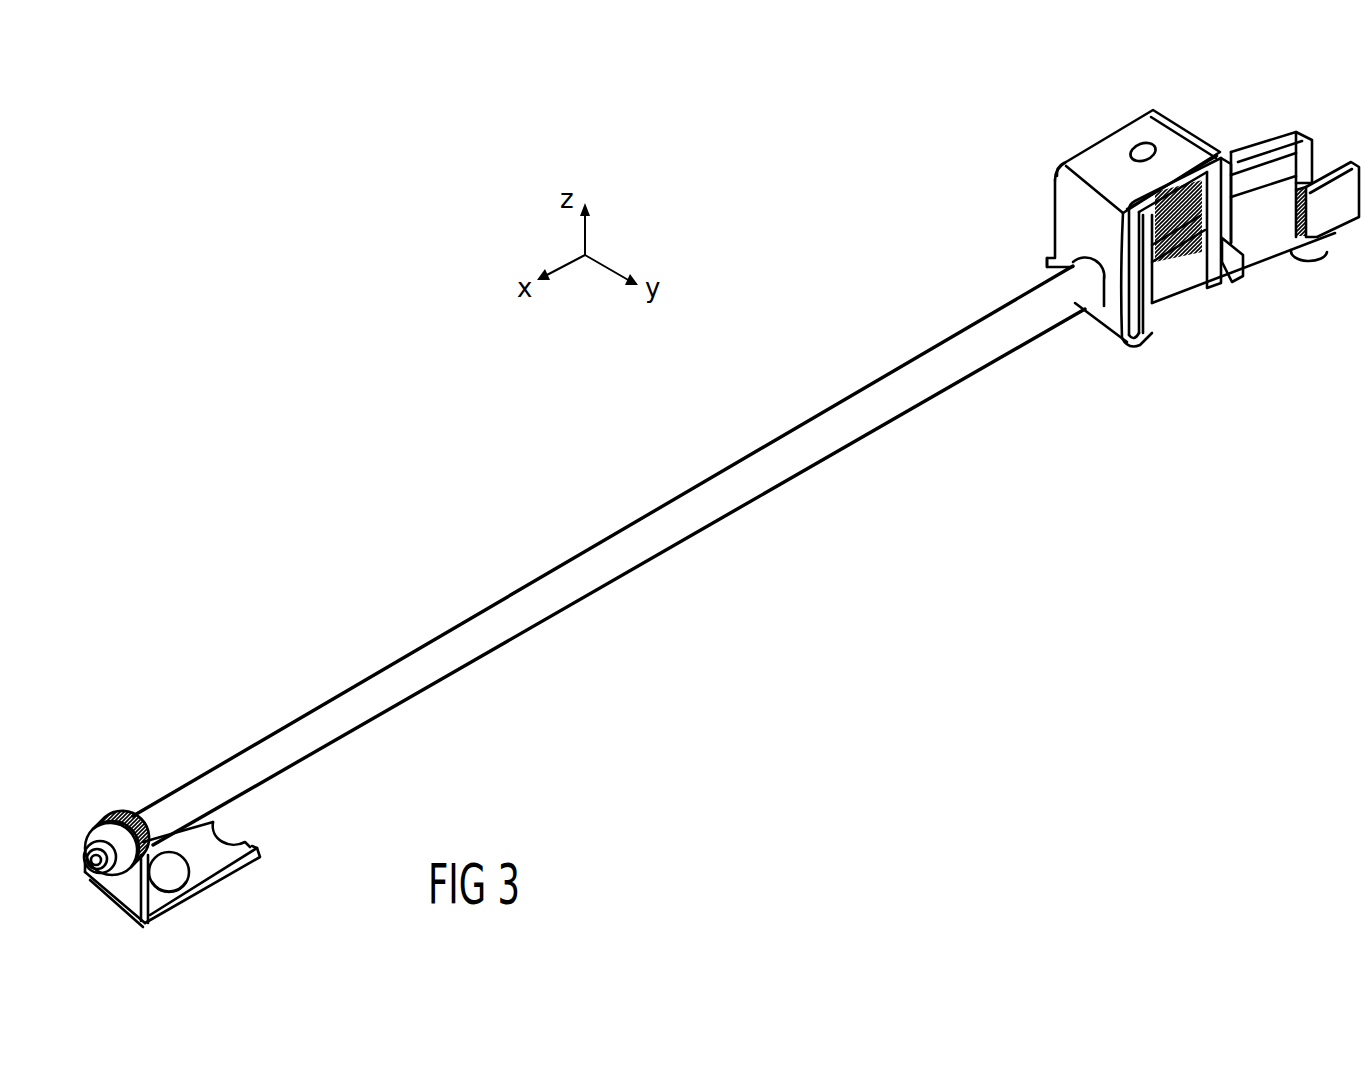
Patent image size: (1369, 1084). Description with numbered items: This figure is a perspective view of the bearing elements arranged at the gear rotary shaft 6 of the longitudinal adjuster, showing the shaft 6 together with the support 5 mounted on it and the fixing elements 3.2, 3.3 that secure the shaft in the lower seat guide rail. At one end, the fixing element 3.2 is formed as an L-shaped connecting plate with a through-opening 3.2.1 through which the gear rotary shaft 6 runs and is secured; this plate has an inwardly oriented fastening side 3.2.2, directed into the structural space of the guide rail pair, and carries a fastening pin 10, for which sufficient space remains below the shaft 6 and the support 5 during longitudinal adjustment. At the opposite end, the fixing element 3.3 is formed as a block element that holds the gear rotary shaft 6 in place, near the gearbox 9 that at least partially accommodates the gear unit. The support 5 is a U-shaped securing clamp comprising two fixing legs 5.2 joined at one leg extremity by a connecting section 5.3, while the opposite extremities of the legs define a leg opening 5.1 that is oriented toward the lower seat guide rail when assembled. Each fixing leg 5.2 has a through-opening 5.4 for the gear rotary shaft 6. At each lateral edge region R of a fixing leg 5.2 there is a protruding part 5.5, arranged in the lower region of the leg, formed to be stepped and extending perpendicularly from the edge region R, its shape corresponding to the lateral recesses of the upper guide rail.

The support 5 is at (1132, 243).
The leg opening 5.1 is at (1140, 318).
The fixing leg 5.2 is at (1226, 167).
The section 5.3 is at (1167, 135).
The through-opening 5.4 is at (1099, 310).
The protruding part 5.5 is at (1047, 278).
The lateral edge region R is at (1191, 162).
The gearbox 9 is at (1183, 255).
The fixing element 3.3 is at (1278, 237).
The gear rotary shaft 6 is at (450, 643).
The fixing element 3.2 is at (206, 845).
The through-opening 3.2.1 is at (108, 812).
The fastening side 3.2.2 is at (258, 847).
The fastening pin 10 is at (170, 873).